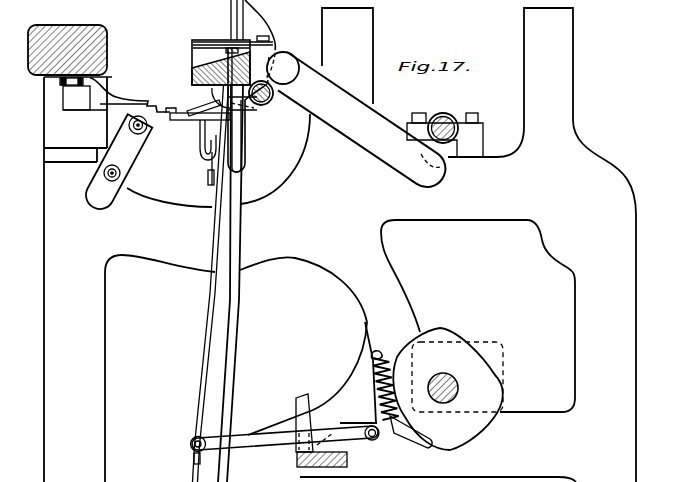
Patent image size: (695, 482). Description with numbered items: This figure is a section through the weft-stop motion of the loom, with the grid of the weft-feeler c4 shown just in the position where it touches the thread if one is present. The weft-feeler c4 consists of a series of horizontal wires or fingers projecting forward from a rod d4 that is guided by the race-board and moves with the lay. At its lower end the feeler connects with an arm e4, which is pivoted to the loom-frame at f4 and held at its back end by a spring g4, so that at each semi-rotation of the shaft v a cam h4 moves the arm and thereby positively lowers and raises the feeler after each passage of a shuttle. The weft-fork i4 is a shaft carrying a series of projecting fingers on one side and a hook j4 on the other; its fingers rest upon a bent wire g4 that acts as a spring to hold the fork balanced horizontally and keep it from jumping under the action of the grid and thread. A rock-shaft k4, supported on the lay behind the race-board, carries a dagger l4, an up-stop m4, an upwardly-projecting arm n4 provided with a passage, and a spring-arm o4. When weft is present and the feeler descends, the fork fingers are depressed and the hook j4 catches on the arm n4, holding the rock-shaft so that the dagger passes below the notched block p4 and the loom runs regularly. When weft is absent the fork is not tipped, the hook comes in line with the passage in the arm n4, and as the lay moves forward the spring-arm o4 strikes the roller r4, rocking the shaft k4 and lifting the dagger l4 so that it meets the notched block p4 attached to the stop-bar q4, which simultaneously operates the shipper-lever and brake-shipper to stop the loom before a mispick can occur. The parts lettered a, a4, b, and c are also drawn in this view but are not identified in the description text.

The frame a is at (340, 245).
The block a4 is at (67, 42).
The stop-bar q4 is at (60, 81).
The notched block p4 is at (150, 98).
The dagger l4 is at (190, 112).
The up-stop m4 is at (217, 102).
The spring-arm o4 is at (196, 124).
The roller r4 is at (145, 128).
The weft-fork i4 is at (192, 42).
The spring g4 is at (203, 49).
The weft-feeler c4 is at (231, 54).
The hook j4 is at (273, 45).
The upwardly-projecting arm n4 is at (262, 17).
The rock-shaft k4 is at (270, 102).
The lever pivot b is at (446, 120).
The rod c is at (227, 241).
The rod d4 is at (209, 313).
The arm e4 is at (285, 439).
The pivot f4 is at (372, 446).
The cam h4 is at (448, 389).
The shaft v is at (458, 386).